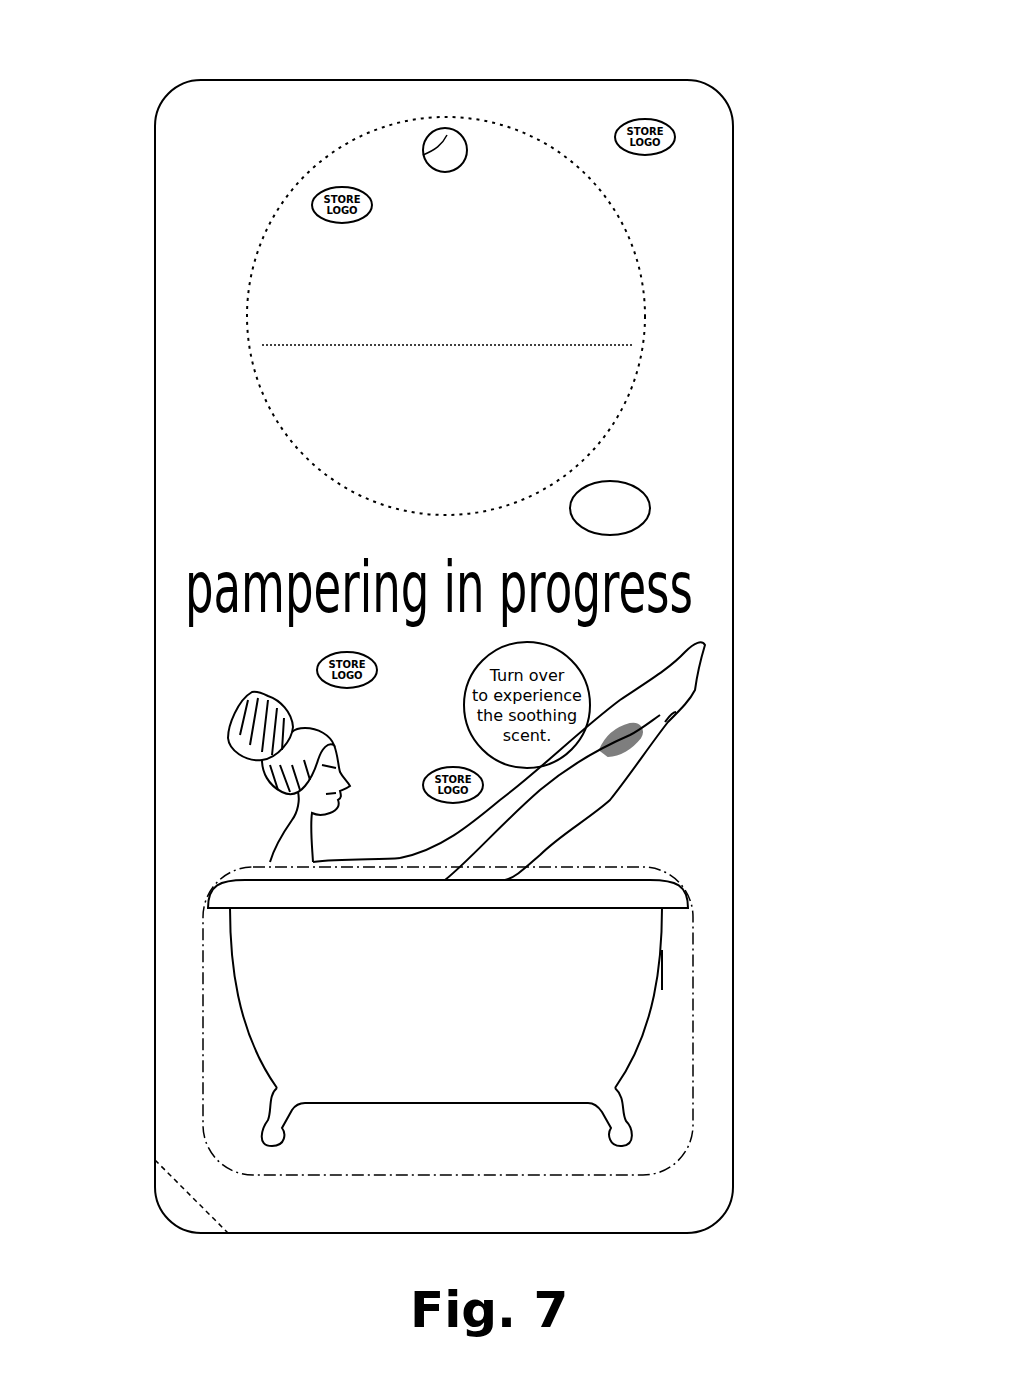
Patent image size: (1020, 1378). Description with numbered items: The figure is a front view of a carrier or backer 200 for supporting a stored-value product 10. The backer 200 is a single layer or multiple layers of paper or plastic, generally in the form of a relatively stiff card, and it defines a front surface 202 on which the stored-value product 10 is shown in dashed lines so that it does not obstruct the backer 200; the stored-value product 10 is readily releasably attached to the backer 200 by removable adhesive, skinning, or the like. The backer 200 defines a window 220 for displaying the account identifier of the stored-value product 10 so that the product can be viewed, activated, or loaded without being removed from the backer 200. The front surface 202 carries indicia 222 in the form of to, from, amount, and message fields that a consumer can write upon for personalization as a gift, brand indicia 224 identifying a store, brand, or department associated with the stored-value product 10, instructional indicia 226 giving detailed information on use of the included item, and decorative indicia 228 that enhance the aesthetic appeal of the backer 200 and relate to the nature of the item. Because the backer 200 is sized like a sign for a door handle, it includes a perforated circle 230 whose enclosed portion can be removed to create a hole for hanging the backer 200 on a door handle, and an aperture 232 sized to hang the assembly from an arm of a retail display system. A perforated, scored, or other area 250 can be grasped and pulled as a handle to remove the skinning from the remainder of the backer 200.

The stored-value product 10 is at (203, 997).
The backer 200 is at (214, 77).
The front surface 202 is at (196, 148).
The window 220 is at (664, 970).
The indicia 222 is at (297, 390).
The brand indicia 224 is at (655, 503).
The instructional indicia 226 is at (616, 310).
The decorative indicia 228 is at (258, 833).
The perforated circle 230 is at (552, 148).
The aperture 232 is at (446, 148).
The perforated, scored, or other area 250 is at (202, 1207).